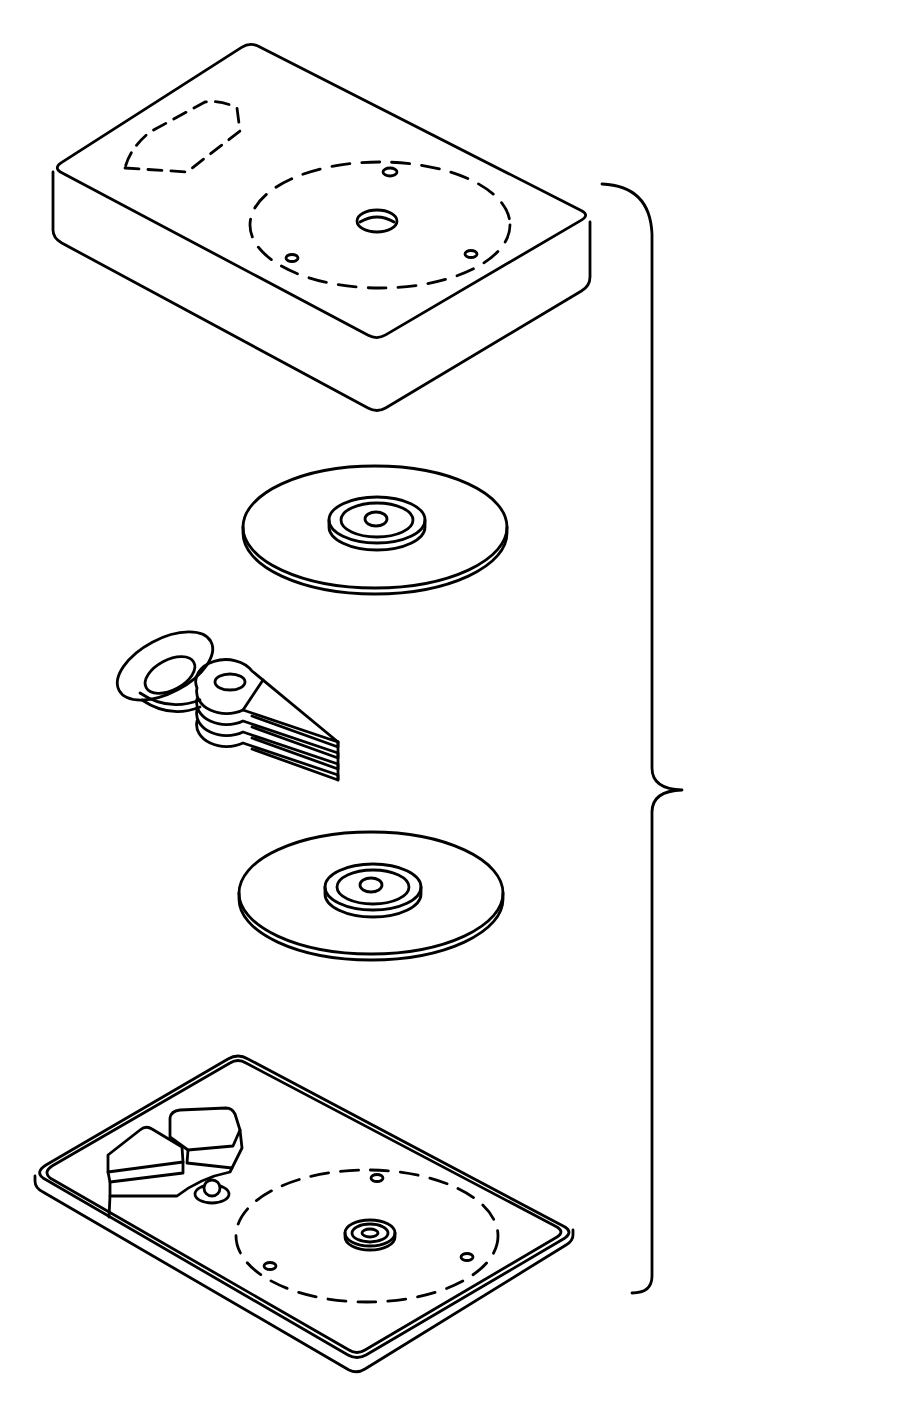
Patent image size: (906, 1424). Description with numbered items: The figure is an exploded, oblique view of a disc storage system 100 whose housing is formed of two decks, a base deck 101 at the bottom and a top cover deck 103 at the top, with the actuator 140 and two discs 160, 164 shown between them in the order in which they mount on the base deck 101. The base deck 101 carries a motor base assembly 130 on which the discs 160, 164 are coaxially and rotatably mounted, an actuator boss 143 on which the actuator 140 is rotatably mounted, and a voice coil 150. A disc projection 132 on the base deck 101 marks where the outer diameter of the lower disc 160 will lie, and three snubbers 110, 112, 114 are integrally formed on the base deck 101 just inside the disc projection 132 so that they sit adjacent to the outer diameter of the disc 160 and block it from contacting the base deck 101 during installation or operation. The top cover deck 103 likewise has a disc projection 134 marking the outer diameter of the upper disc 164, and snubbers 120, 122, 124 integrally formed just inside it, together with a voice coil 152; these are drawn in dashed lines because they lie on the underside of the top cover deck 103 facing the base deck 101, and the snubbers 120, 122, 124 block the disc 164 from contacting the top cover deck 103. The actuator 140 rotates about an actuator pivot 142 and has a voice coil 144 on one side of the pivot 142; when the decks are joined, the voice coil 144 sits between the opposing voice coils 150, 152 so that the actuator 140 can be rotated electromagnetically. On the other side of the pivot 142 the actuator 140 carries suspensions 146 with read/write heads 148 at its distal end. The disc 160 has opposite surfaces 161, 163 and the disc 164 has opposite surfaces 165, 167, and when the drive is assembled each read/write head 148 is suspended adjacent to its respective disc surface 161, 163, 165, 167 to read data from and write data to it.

The disc storage system 100 is at (617, 102).
The base deck 101 is at (297, 1195).
The top cover deck 103 is at (321, 205).
The snubber 110 is at (270, 1273).
The snubber 112 is at (475, 1262).
The snubber 114 is at (377, 1172).
The snubber 120 is at (291, 262).
The snubber 122 is at (475, 258).
The snubber 124 is at (390, 163).
The motor base assembly 130 is at (347, 1238).
The disc projection 132 is at (483, 1205).
The disc projection 134 is at (448, 167).
The actuator 140 is at (201, 722).
The actuator pivot 142 is at (231, 673).
The actuator boss 143 is at (198, 1200).
The voice coil 144 is at (142, 658).
The suspensions 146 is at (229, 761).
The read/write heads 148 is at (304, 788).
The voice coil 150 is at (108, 1216).
The voice coil 152 is at (165, 119).
The disc 160 is at (401, 920).
The disc surface 161 is at (476, 930).
The disc surface 163 is at (478, 883).
The disc 164 is at (408, 547).
The disc surface 165 is at (497, 556).
The disc surface 167 is at (488, 513).